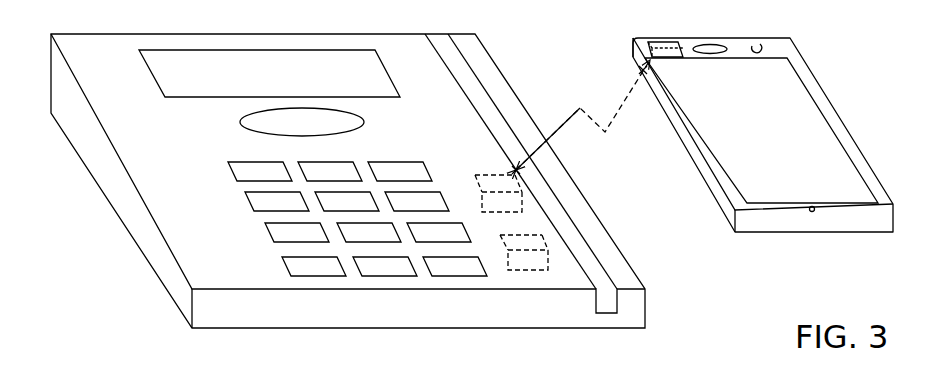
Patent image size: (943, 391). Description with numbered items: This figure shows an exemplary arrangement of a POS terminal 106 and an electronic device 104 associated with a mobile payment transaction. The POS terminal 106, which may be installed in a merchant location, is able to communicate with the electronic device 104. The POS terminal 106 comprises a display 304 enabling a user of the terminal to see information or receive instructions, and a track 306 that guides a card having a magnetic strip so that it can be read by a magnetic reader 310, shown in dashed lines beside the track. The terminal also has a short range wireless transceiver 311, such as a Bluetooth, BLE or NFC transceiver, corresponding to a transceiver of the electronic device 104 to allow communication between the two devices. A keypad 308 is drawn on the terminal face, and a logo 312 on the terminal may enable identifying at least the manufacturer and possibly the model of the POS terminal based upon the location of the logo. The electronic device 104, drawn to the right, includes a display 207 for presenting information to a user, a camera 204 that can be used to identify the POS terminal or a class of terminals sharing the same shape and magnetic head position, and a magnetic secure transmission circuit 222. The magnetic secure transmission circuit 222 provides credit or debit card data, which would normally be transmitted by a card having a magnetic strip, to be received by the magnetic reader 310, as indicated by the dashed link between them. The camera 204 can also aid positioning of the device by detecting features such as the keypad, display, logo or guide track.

The electronic device 104 is at (740, 126).
The POS terminal 106 is at (67, 133).
The camera 204 is at (758, 48).
The display 207 is at (817, 143).
The magnetic secure transmission circuit 222 is at (650, 45).
The display 304 is at (392, 73).
The track 306 is at (473, 68).
The keypad 308 is at (243, 215).
The magnetic reader 310 is at (492, 174).
The short range wireless transceiver 311 is at (527, 275).
The logo 312 is at (240, 122).